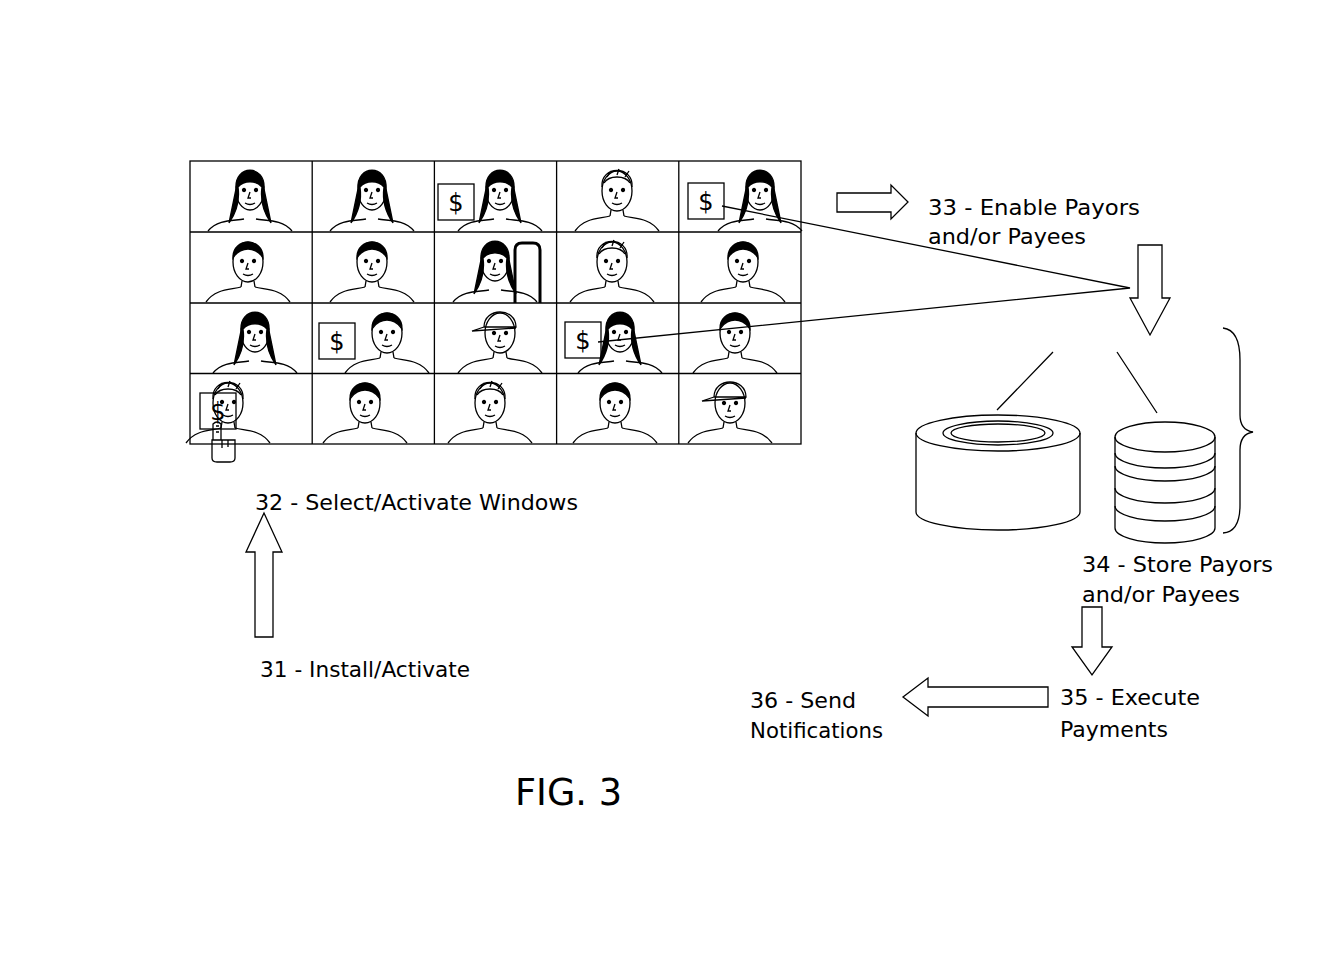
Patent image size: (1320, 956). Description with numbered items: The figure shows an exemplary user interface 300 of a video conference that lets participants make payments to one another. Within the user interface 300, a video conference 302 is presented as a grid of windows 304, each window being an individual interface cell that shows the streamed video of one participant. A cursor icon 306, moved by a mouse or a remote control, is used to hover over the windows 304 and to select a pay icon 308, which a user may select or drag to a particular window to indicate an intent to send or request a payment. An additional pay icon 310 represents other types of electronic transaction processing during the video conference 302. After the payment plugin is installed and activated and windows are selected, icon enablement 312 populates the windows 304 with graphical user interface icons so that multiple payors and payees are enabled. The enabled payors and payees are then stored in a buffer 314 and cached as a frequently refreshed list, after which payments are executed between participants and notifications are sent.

The user interface 300 is at (1152, 90).
The video conference 302 is at (549, 156).
The windows 304 is at (181, 203).
The cursor icon 306 is at (212, 452).
The pay icon 308 is at (197, 414).
The additional pay icon 310 is at (336, 362).
The icon enablement 312 is at (898, 257).
The buffer 314 is at (1114, 434).